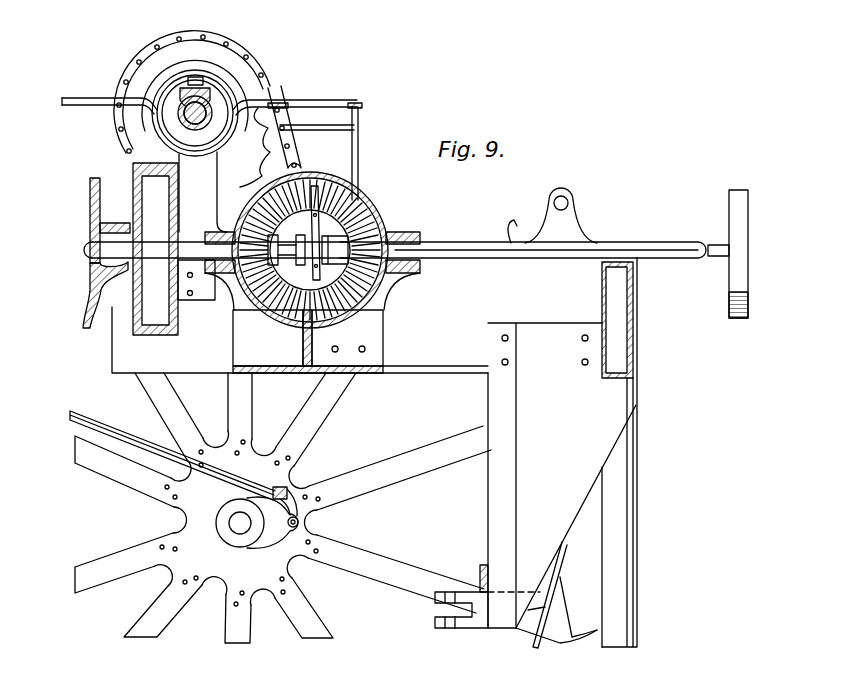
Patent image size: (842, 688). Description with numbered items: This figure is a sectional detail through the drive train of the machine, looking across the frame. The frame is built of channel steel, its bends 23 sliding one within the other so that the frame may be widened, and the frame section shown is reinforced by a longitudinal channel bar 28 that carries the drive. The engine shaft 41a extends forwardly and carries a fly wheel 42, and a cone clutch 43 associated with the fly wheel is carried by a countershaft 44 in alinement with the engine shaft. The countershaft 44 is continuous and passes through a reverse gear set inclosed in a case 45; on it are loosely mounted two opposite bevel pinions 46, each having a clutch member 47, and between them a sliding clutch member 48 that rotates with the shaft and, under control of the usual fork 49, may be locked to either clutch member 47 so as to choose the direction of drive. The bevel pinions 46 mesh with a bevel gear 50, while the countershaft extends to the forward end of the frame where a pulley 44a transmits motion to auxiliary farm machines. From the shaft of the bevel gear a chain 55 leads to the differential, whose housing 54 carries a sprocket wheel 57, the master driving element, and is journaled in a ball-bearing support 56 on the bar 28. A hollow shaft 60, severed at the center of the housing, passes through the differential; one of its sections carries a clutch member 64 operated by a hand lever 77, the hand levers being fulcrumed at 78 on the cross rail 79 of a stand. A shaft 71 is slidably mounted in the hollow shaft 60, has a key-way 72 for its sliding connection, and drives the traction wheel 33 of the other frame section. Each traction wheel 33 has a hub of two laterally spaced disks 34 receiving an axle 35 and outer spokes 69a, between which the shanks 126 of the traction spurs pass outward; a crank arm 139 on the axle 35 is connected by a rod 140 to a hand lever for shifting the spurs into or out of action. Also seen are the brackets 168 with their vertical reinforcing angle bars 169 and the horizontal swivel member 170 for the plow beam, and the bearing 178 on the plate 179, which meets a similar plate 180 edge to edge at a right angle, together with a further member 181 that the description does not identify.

The frame bend 23 is at (630, 343).
The longitudinal channel bar 28 is at (443, 360).
The traction wheel 33 is at (545, 644).
The hub disk 34 is at (220, 568).
The axle 35 is at (240, 522).
The engine shaft 41a is at (113, 248).
The fly wheel 42 is at (133, 327).
The cone clutch 43 is at (172, 316).
The countershaft 44 is at (160, 262).
The pulley 44a is at (733, 210).
The case 45 is at (398, 208).
The bevel pinion 46 is at (386, 228).
The clutch member 47 is at (343, 260).
The sliding clutch member 48 is at (327, 233).
The fork 49 is at (320, 278).
The bevel gear 50 is at (338, 192).
The differential housing 54 is at (164, 66).
The chain 55 is at (205, 112).
The ball-bearing support 56 is at (196, 74).
The sprocket wheel 57 is at (226, 52).
The hollow shaft 60 is at (183, 132).
The clutch member 64 is at (170, 130).
The outer spokes 69a is at (380, 581).
The shaft 71 is at (283, 94).
The key-way 72 is at (210, 104).
The hand lever 77 is at (80, 99).
The fulcrum 78 is at (358, 101).
The cross rail 79 is at (367, 104).
The shank 126 is at (489, 640).
The crank arm 139 is at (277, 526).
The rod 140 is at (117, 430).
The bracket 168 is at (545, 475).
The vertical reinforcing angle bar 169 is at (493, 507).
The horizontal swivel member 170 is at (474, 621).
The bearing 178 is at (577, 191).
The plate 179 is at (567, 231).
The plate 180 is at (638, 482).
The lower plate 181 is at (620, 534).